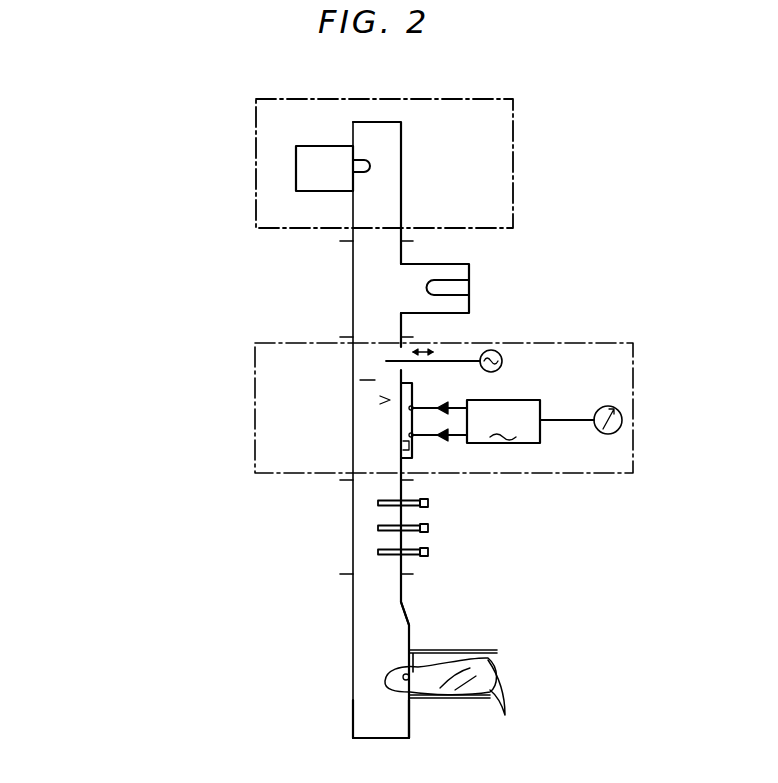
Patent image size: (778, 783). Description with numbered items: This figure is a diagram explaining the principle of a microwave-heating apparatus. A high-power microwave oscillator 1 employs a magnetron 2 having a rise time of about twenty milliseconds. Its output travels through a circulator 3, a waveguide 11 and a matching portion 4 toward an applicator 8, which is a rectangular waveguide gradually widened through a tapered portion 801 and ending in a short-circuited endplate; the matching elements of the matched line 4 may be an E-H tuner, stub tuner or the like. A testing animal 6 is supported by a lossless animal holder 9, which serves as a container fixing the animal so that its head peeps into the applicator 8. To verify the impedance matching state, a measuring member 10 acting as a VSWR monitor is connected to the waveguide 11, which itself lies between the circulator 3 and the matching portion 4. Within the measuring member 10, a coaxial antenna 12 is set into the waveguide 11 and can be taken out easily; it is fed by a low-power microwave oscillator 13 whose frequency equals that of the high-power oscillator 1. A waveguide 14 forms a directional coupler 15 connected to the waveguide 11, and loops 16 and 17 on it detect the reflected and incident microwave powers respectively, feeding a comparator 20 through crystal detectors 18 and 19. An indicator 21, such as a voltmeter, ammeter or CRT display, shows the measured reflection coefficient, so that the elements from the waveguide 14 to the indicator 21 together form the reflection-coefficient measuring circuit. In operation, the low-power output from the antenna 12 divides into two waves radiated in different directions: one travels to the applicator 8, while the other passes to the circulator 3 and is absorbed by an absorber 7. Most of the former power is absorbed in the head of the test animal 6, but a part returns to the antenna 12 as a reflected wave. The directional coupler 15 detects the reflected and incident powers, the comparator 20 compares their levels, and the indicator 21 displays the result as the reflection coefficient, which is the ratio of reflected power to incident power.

The high-power microwave oscillator 1 is at (483, 99).
The magnetron 2 is at (303, 167).
The circulator 3 is at (358, 263).
The matching portion 4 is at (368, 515).
The testing animal 6 is at (478, 677).
The absorber 7 is at (460, 288).
The applicator 8 is at (377, 651).
The animal holder 9 is at (468, 650).
The measuring member 10 is at (631, 343).
The waveguide 11 is at (360, 380).
The coaxial antenna 12 is at (393, 361).
The low-power microwave oscillator 13 is at (497, 352).
The waveguide 14 is at (414, 460).
The directional coupler 15 is at (390, 400).
The loop 16 is at (409, 409).
The loop 17 is at (409, 436).
The crystal detector 18 is at (441, 404).
The crystal detector 19 is at (447, 440).
The comparator 20 is at (503, 421).
The indicator 21 is at (622, 414).
The tapered portion 801 is at (405, 614).